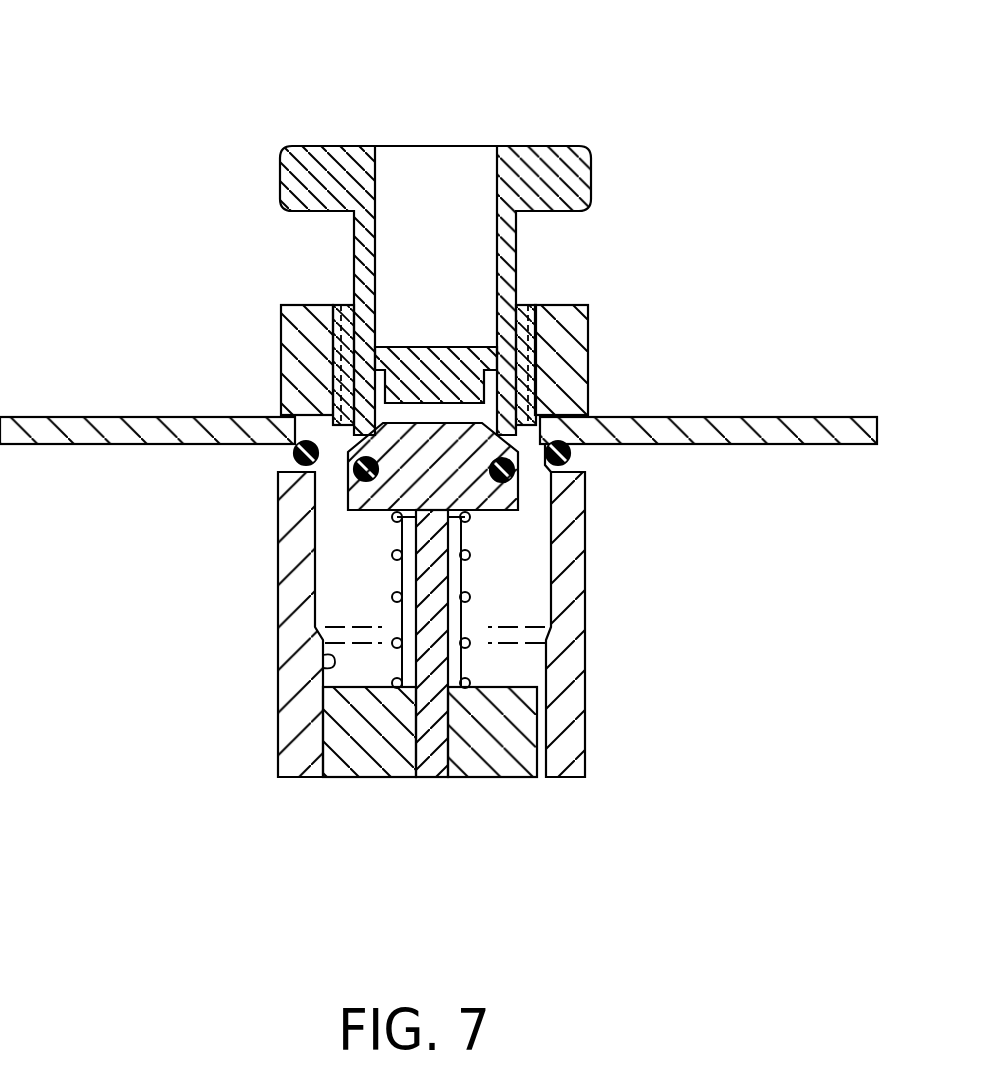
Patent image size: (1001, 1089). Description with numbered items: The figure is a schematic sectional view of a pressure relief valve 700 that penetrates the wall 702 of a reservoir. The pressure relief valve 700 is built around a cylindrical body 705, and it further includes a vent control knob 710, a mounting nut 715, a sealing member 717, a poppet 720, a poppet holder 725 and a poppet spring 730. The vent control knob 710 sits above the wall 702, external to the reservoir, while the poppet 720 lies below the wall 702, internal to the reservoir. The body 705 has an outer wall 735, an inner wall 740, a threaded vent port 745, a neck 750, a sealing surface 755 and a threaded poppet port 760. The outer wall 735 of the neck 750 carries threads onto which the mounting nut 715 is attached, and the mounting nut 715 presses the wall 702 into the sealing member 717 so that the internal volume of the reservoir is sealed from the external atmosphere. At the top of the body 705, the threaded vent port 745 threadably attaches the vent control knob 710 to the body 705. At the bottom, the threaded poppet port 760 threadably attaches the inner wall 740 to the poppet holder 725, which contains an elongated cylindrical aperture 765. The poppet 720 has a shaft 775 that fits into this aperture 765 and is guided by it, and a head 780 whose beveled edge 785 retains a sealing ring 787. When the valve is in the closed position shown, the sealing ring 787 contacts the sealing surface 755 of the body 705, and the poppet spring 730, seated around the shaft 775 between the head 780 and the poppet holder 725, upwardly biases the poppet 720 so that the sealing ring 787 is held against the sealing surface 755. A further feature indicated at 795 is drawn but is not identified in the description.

The pressure relief valve 700 is at (205, 105).
The wall 702 is at (143, 423).
The cylindrical body 705 is at (278, 593).
The vent control knob 710 is at (608, 148).
The mounting nut 715 is at (277, 294).
The sealing member 717 is at (295, 453).
The poppet 720 is at (350, 502).
The poppet holder 725 is at (503, 788).
The poppet spring 730 is at (467, 602).
The outer wall 735 is at (323, 660).
The inner wall 740 is at (322, 664).
The threaded vent port 745 is at (522, 367).
The neck 750 is at (285, 393).
The sealing surface 755 is at (545, 432).
The threaded poppet port 760 is at (550, 738).
The elongated cylindrical aperture 765 is at (421, 768).
The shaft 775 is at (415, 528).
The head 780 is at (455, 450).
The beveled edge 785 is at (528, 400).
The sealing ring 787 is at (355, 476).
The seat 795 is at (506, 516).